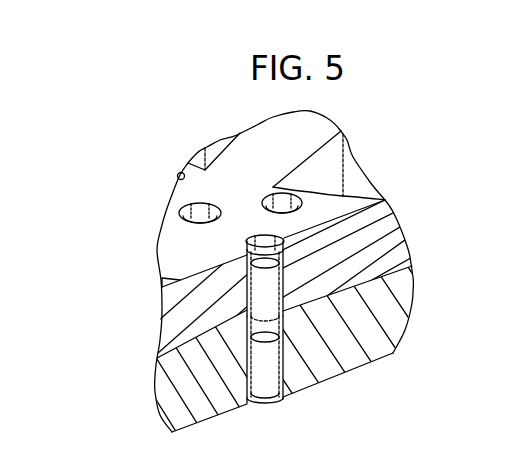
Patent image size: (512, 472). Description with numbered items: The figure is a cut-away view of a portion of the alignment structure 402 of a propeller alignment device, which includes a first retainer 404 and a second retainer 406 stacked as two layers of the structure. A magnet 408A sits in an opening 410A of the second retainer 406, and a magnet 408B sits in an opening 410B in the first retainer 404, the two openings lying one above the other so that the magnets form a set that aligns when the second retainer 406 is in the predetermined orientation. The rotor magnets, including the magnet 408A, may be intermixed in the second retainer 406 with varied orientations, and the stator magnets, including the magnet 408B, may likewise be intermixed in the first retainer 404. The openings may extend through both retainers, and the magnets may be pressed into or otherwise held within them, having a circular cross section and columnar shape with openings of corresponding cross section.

The alignment structure 402 is at (383, 150).
The first retainer 404 is at (400, 313).
The second retainer 406 is at (405, 232).
The magnet 408A is at (249, 286).
The magnet 408B is at (252, 362).
The opening 410A is at (247, 252).
The opening 410B is at (250, 399).